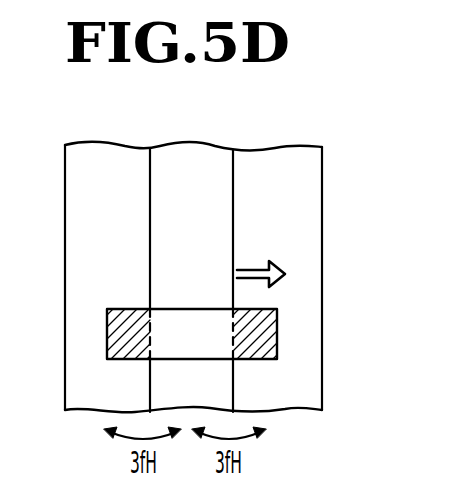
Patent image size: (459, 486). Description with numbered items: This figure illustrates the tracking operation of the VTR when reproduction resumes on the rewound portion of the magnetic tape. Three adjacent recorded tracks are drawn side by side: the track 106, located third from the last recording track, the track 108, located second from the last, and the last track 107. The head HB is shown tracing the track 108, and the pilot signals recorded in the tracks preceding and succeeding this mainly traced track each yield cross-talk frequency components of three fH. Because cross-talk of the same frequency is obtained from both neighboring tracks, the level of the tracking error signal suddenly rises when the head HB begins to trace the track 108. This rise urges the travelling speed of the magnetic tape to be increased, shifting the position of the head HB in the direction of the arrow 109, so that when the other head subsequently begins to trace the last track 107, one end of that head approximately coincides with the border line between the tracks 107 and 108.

The track 106 is at (120, 152).
The track 108 is at (199, 154).
The last track 107 is at (284, 155).
The arrow 109 is at (286, 273).
The head HB is at (277, 340).